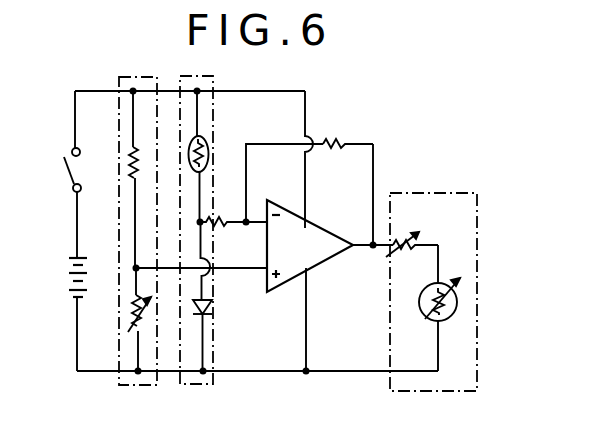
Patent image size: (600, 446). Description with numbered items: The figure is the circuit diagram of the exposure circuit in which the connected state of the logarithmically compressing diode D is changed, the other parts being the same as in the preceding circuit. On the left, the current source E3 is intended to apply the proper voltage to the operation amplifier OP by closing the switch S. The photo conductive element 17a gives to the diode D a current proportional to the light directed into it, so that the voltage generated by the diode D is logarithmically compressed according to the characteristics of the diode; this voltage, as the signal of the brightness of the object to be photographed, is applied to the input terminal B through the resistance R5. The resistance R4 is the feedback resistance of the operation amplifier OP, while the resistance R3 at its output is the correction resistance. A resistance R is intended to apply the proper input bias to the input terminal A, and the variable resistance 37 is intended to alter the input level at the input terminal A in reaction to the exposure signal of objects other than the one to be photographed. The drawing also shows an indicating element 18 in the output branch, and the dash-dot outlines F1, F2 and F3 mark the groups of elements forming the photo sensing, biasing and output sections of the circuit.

The photo conductive element 17a is at (208, 138).
The variable resistance 37 is at (130, 308).
The lamp 18 is at (422, 303).
The resistor R is at (143, 179).
The correction resistance R3 is at (395, 231).
The feed back resistance R4 is at (309, 177).
The resistance R5 is at (233, 206).
The switch S is at (66, 203).
The current source E3 is at (66, 277).
The diode D is at (210, 306).
The operation amplifier OP is at (310, 246).
The input terminal A is at (256, 283).
The input terminal B is at (256, 208).
The block F1 is at (200, 385).
The block F2 is at (144, 386).
The block F3 is at (453, 192).